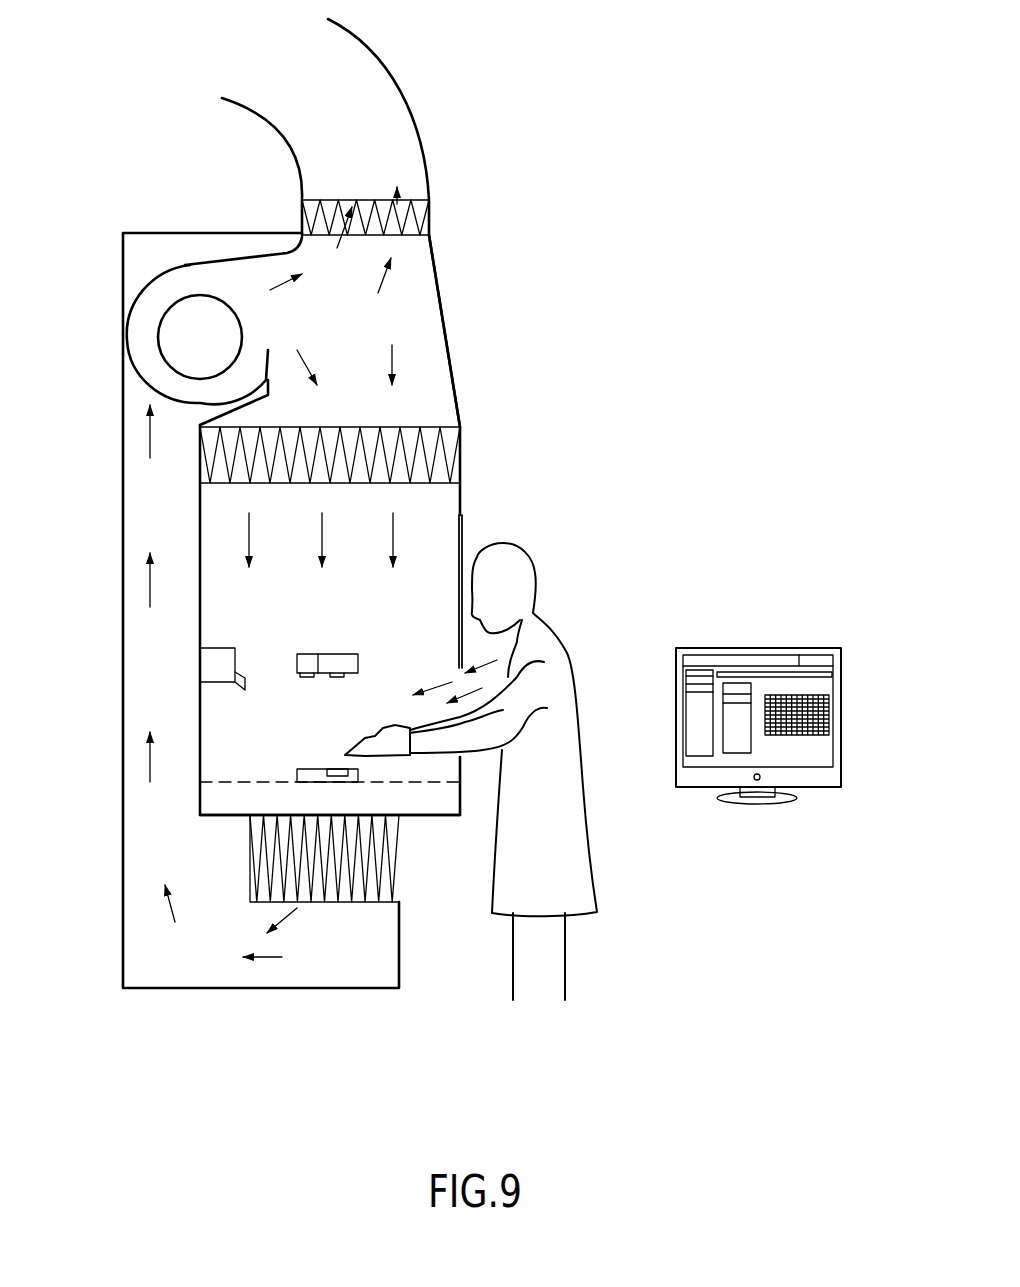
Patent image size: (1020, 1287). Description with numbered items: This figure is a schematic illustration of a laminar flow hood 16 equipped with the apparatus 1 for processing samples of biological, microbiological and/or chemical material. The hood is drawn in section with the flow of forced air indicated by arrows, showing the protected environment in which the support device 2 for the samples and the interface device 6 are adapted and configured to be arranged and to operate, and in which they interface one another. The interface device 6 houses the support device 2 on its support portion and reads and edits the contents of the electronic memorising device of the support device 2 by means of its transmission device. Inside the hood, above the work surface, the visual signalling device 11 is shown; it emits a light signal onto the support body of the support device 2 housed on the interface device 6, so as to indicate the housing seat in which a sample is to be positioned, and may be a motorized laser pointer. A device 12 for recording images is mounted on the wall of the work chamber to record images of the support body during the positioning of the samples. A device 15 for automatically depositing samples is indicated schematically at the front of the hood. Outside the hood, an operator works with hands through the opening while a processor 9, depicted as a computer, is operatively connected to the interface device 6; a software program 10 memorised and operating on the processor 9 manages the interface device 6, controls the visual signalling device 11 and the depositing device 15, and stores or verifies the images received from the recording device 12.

The apparatus 1 is at (298, 623).
The support device 2 is at (333, 773).
The interface device 6 is at (310, 767).
The processor 9 is at (781, 682).
The software program 10 is at (811, 697).
The visual signalling device 11 is at (305, 653).
The device for recording images 12 is at (213, 672).
The device for automatically depositing samples 15 is at (337, 653).
The laminar flow hood 16 is at (442, 300).